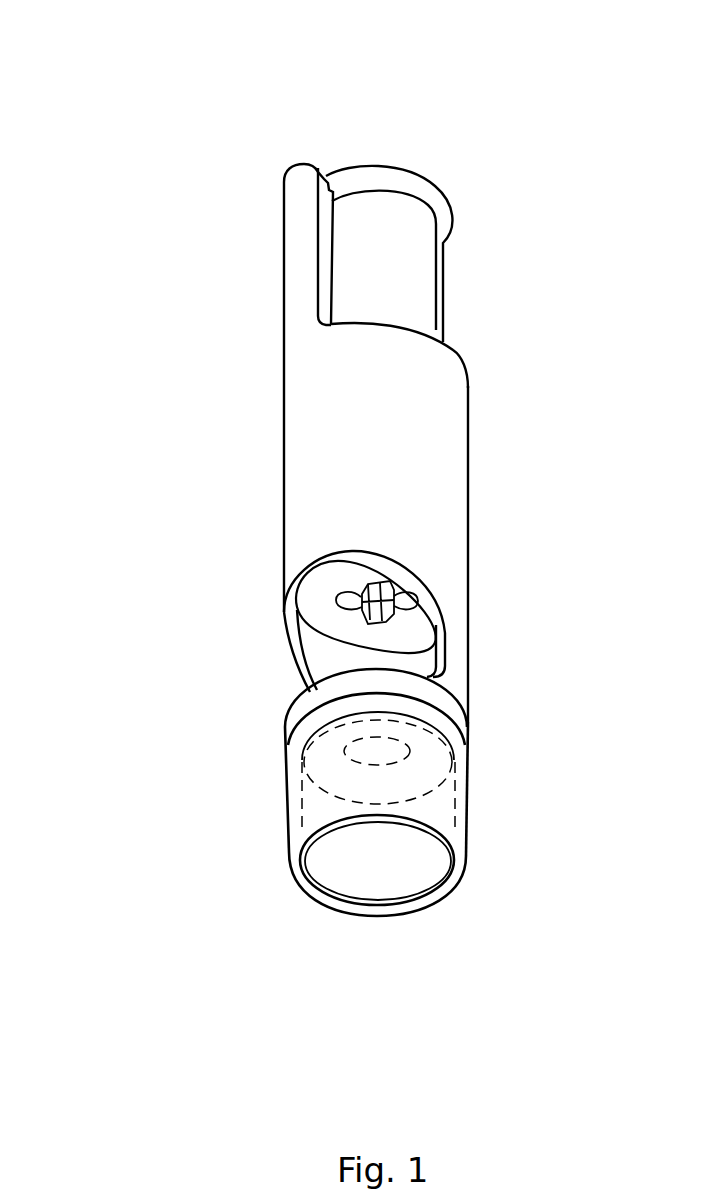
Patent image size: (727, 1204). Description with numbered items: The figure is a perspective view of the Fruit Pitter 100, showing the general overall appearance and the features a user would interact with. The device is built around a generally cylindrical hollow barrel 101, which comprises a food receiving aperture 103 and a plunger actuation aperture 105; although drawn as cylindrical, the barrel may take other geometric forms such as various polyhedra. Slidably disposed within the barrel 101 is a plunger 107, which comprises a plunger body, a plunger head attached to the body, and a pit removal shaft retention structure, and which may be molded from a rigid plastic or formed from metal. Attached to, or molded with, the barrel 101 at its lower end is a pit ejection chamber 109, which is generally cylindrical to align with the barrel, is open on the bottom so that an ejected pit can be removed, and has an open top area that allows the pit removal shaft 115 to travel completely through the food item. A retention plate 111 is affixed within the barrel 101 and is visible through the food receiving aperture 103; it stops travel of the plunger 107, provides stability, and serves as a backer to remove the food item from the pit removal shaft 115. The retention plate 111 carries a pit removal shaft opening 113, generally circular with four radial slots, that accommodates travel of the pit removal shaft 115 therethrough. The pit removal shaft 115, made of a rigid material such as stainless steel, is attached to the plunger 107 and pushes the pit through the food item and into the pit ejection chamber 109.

The Fruit Pitter 100 is at (210, 143).
The generally cylindrical hollow barrel 101 is at (450, 458).
The food receiving aperture 103 is at (323, 660).
The plunger actuation aperture 105 is at (457, 345).
The plunger 107 is at (356, 181).
The pit ejection chamber 109 is at (467, 803).
The retention plate 111 is at (317, 605).
The pit removal shaft opening 113 is at (337, 598).
The pit removal shaft 115 is at (398, 595).